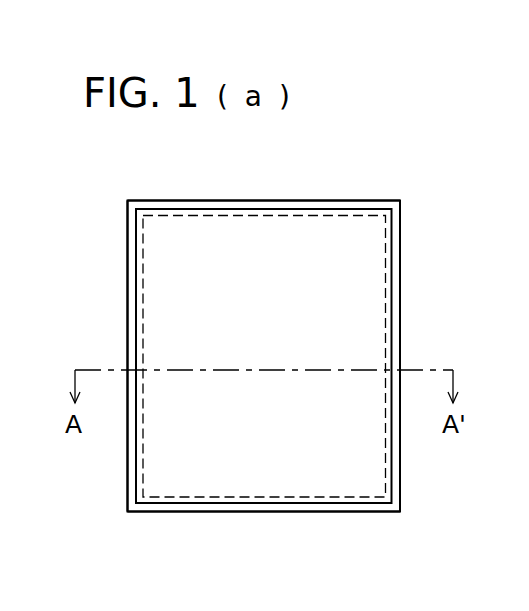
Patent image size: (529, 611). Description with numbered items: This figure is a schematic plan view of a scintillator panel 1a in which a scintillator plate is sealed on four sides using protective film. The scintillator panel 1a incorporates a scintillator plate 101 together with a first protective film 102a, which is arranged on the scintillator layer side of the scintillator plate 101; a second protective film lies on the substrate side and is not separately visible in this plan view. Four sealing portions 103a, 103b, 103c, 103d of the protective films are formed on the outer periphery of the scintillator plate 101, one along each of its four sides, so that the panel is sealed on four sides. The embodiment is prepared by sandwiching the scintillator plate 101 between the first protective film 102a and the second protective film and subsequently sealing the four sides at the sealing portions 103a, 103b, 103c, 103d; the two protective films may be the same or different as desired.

The scintillator panel 1a is at (377, 183).
The scintillator plate 101 is at (167, 440).
The first protective film 102a is at (180, 303).
The sealing portion 103a is at (158, 205).
The sealing portion 103b is at (395, 303).
The sealing portion 103c is at (189, 505).
The sealing portion 103d is at (130, 350).